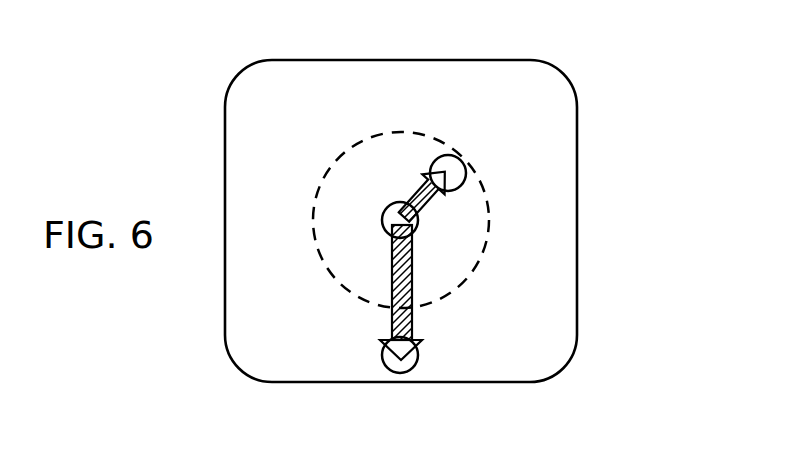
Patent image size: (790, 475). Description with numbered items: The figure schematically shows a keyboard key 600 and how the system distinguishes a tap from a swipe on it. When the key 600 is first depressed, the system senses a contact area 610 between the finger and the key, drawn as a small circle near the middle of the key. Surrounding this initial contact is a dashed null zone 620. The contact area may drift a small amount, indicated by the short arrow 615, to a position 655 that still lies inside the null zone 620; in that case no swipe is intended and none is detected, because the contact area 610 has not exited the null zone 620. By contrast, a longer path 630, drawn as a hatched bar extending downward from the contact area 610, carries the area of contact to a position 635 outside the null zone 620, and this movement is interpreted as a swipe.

The key 600 is at (322, 60).
The contact area 610 is at (418, 223).
The arrow 615 is at (413, 188).
The null zone 620 is at (310, 220).
The longer path 630 is at (412, 292).
The position 635 is at (420, 357).
The position 655 is at (443, 147).